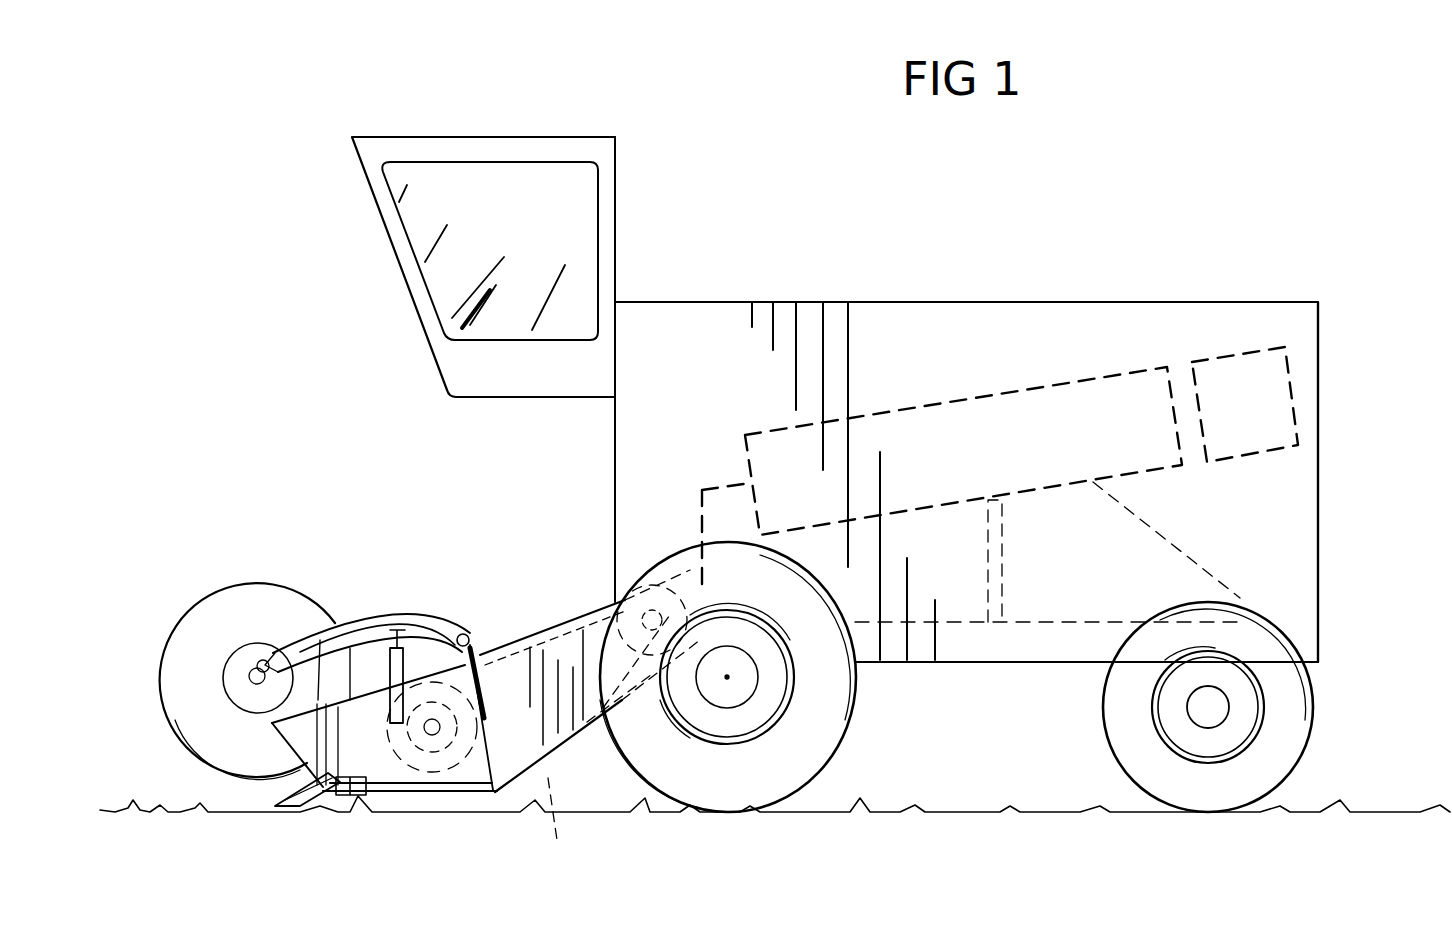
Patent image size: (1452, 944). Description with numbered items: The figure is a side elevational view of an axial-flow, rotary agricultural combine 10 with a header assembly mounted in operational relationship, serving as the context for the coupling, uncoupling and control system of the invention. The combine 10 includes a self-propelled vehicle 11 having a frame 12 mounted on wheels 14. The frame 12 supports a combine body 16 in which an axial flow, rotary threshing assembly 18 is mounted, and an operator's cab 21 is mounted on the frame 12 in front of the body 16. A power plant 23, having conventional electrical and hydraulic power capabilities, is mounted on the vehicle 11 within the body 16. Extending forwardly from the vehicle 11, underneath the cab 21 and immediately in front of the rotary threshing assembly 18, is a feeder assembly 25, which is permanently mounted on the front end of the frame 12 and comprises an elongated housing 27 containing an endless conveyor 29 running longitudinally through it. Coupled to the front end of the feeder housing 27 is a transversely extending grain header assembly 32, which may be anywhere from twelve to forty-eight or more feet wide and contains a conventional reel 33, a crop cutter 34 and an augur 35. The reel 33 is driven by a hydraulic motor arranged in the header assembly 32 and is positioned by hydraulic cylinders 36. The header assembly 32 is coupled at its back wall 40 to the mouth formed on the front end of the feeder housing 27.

The combine 10 is at (1170, 258).
The self-propelled vehicle 11 is at (826, 245).
The frame 12 is at (1058, 570).
The wheels 14 is at (830, 712).
The combine body 16 is at (1320, 530).
The rotary threshing assembly 18 is at (1022, 416).
The operator's cab 21 is at (473, 170).
The power plant 23 is at (1268, 380).
The feeder assembly 25 is at (611, 775).
The feeder housing 27 is at (605, 603).
The endless conveyor 29 is at (557, 845).
The grain header assembly 32 is at (463, 800).
The reel 33 is at (253, 605).
The crop cutter 34 is at (313, 797).
The augur 35 is at (418, 752).
The hydraulic cylinders 36 is at (408, 657).
The back wall 40 is at (480, 650).